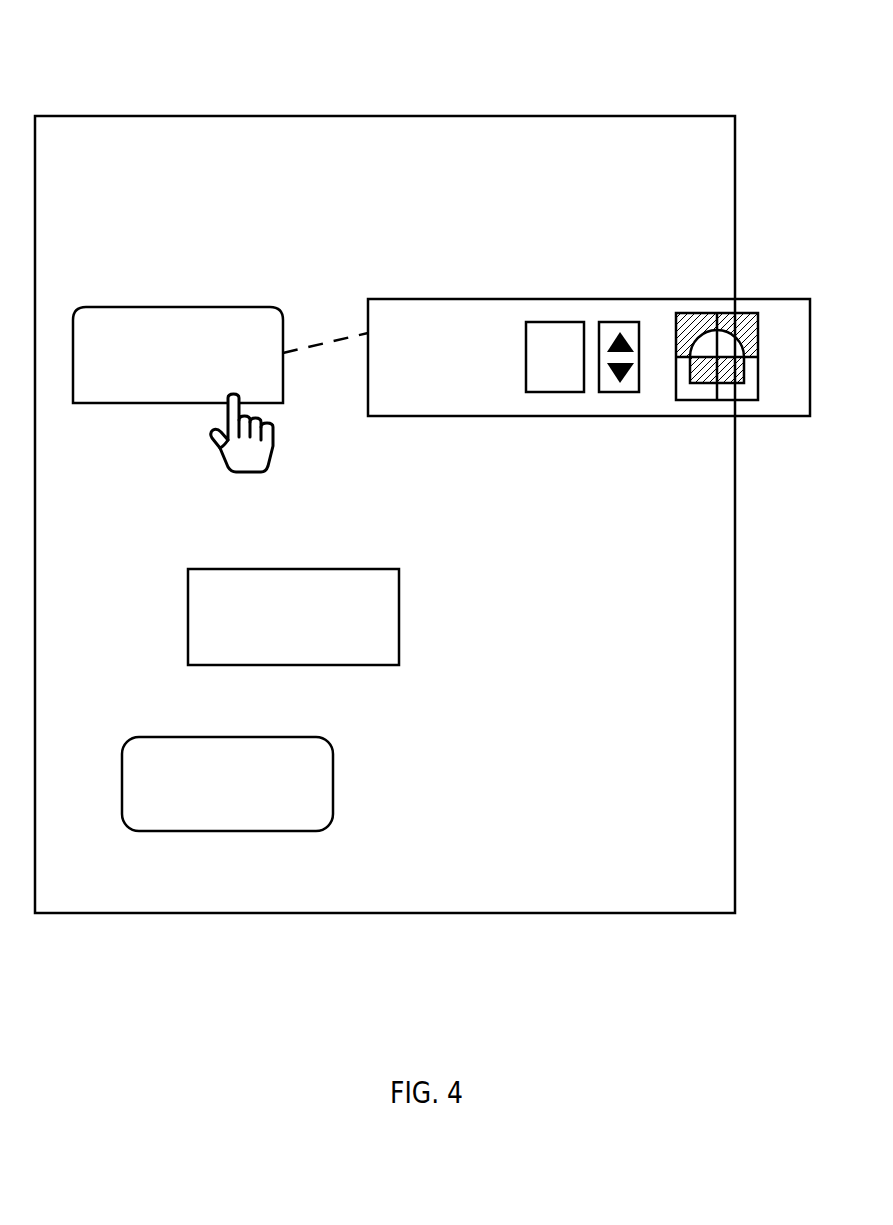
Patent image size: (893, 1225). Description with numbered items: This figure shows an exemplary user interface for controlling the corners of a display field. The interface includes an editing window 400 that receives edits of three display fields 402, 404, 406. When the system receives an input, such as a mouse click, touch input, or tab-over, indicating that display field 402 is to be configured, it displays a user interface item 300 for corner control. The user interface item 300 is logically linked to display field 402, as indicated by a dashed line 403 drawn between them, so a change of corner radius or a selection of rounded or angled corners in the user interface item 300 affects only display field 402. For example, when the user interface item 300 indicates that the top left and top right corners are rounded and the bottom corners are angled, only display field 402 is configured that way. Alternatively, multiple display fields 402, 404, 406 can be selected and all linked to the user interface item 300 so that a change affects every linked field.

The editing window 400 is at (272, 116).
The display field 402 is at (227, 307).
The dashed line 403 is at (351, 336).
The user interface item 300 is at (493, 299).
The display field 404 is at (399, 618).
The display field 406 is at (333, 782).